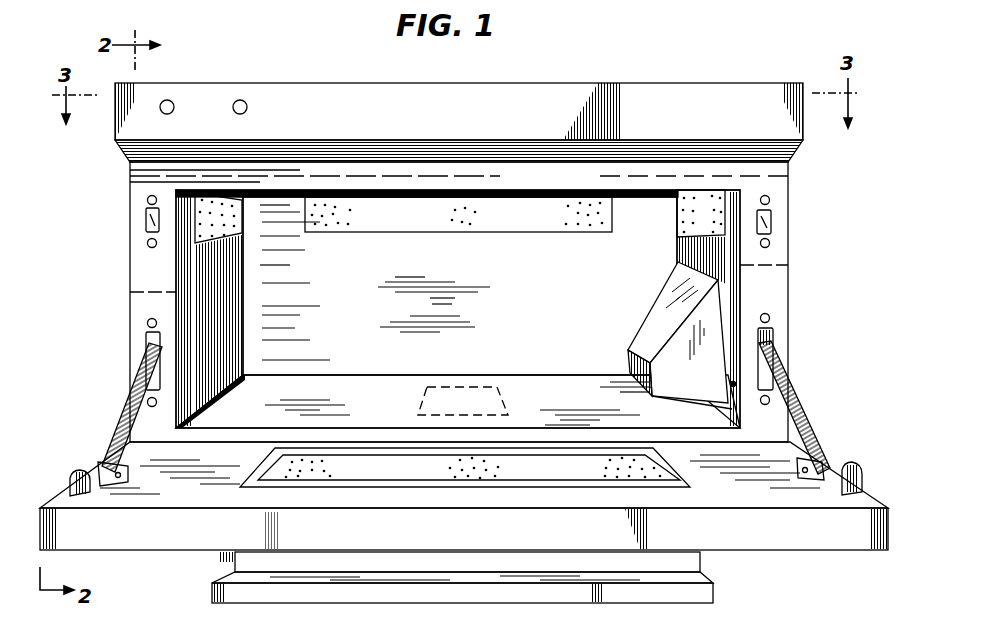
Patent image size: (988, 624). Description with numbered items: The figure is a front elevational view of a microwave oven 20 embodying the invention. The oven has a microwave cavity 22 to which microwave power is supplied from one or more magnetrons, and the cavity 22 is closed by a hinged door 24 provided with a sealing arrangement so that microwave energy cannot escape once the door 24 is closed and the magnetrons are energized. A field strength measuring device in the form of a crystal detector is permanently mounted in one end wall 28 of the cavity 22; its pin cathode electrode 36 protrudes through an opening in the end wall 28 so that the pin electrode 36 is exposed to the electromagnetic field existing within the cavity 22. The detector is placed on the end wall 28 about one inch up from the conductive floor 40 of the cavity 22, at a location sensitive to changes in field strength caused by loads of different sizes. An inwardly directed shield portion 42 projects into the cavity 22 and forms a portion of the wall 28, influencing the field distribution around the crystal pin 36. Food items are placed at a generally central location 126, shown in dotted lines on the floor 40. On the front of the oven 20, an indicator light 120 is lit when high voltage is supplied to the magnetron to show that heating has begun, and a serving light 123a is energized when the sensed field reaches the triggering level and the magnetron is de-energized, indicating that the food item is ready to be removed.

The microwave oven 20 is at (793, 247).
The microwave cavity 22 is at (598, 287).
The hinged door 24 is at (798, 486).
The end wall 28 is at (733, 298).
The pin cathode electrode 36 is at (731, 390).
The conductive floor 40 is at (343, 397).
The shield portion 42 is at (646, 339).
The indicator light 120 is at (168, 99).
The serving light 123a is at (243, 99).
The central location 126 is at (511, 399).